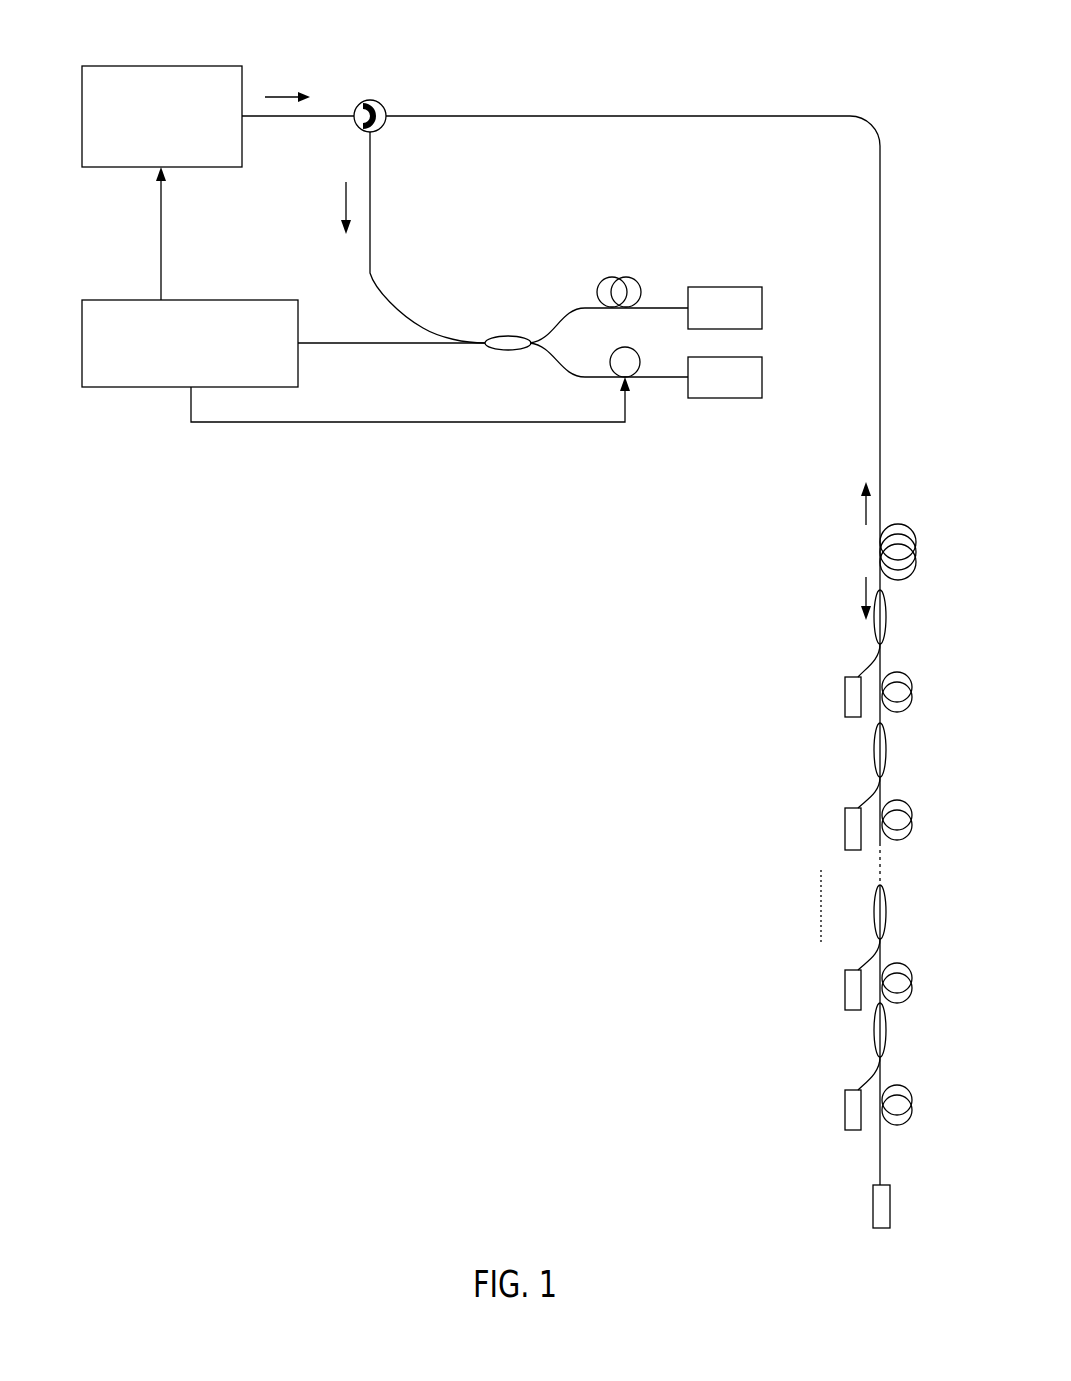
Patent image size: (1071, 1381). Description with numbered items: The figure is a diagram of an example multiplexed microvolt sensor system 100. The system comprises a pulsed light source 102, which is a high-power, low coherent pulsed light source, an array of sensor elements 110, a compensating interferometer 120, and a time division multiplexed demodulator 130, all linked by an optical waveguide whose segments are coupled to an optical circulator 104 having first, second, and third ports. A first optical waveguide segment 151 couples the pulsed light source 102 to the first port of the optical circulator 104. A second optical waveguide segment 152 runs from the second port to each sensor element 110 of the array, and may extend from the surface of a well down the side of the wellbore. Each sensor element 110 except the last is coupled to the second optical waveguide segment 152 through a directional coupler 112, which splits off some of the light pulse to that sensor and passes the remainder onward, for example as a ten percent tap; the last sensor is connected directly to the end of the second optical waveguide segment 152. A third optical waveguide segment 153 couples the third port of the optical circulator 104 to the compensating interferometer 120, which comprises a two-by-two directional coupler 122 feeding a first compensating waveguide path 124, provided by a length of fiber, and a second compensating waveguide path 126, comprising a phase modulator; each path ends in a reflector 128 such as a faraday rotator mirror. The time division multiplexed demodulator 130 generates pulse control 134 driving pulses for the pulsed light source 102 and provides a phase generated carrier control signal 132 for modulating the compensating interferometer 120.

The multiplexed microvolt sensor system 100 is at (832, 35).
The pulsed light source 102 is at (200, 66).
The optical circulator 104 is at (363, 100).
The sensor element 110 is at (852, 718).
The directional coupler 112 is at (878, 630).
The compensating interferometer 120 is at (493, 314).
The 2×2 directional coupler 122 is at (496, 349).
The first compensating waveguide path 124 is at (628, 278).
The second compensating waveguide path 126 is at (622, 348).
The reflector 128 is at (750, 287).
The time division multiplexed demodulator 130 is at (120, 388).
The phase generated carrier control signal 132 is at (435, 423).
The pulse control 134 is at (160, 219).
The first optical waveguide segment 151 is at (288, 119).
The second optical waveguide segment 152 is at (594, 117).
The third optical waveguide segment 153 is at (372, 212).